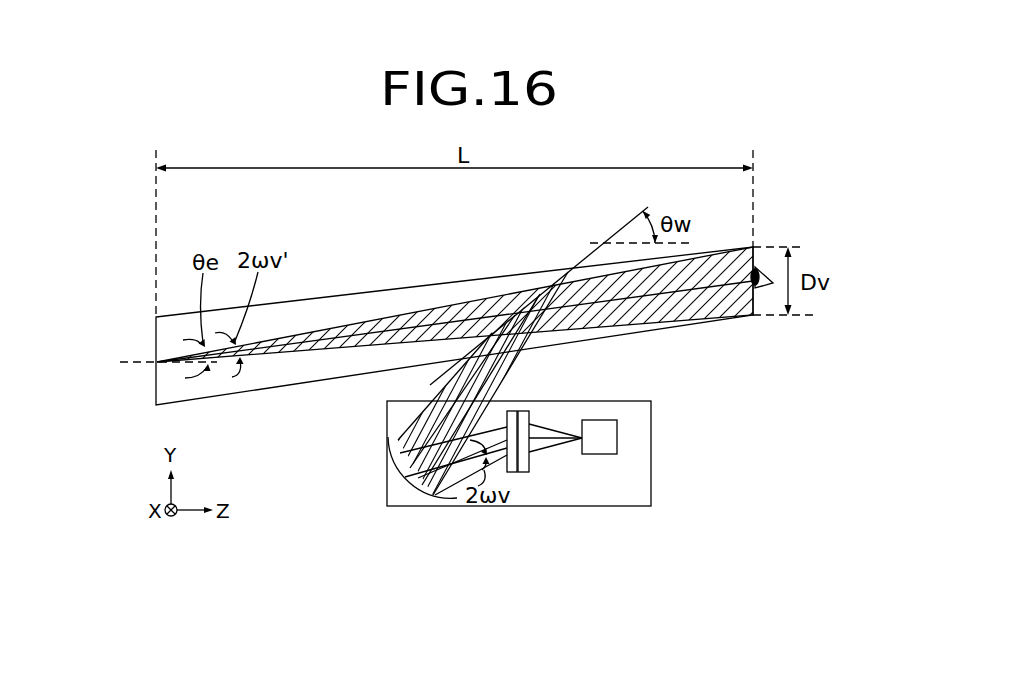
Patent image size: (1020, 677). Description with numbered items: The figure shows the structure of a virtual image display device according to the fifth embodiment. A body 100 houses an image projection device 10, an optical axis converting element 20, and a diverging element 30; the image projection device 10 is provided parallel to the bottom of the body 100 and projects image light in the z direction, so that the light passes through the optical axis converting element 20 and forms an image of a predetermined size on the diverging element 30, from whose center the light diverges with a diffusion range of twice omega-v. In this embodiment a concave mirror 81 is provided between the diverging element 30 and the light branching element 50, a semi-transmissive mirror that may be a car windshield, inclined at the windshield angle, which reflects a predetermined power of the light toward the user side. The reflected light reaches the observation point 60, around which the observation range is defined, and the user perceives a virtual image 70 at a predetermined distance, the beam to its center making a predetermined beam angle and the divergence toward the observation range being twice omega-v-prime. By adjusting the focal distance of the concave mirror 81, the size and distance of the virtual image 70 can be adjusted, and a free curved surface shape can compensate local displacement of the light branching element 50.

The image projection device 10 is at (608, 437).
The optical axis converting element 20 is at (527, 472).
The diverging element 30 is at (510, 472).
The light branching element 50 is at (590, 243).
The observation point 60 is at (758, 286).
The virtual image 70 is at (154, 376).
The concave mirror 81 is at (412, 480).
The body 100 is at (622, 492).